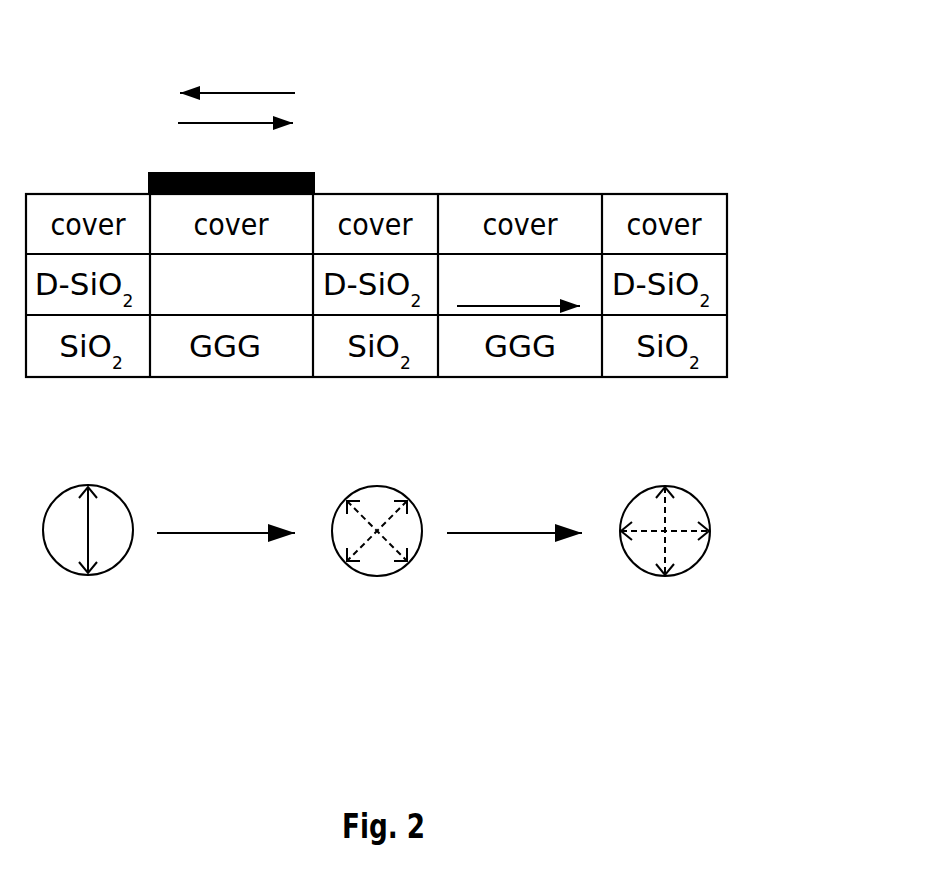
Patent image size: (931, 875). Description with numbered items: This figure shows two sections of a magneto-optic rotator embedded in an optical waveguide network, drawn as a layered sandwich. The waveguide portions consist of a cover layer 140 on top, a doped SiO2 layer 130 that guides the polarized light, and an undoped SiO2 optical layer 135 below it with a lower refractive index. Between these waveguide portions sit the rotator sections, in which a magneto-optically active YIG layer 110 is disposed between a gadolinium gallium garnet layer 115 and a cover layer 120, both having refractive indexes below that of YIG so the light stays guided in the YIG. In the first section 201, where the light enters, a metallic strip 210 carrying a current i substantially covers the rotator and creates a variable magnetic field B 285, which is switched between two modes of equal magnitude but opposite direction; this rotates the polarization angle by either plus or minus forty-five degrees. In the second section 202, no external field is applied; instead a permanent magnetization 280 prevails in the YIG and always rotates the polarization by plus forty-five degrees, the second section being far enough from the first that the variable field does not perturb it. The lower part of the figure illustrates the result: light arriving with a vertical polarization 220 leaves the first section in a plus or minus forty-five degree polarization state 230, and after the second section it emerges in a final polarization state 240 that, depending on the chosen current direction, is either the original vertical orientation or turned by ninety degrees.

The magneto-optically active layer 110 is at (288, 283).
The cover layer 120 is at (519, 184).
The gadolinium gallium garnet layer 115 is at (523, 386).
The permanent magnetization 280 is at (582, 309).
The cover layer 140 is at (737, 226).
The doped SiO2 layer 130 is at (737, 285).
The undoped SiO2 optical layer 135 is at (737, 347).
The metallic strip 210 is at (187, 164).
The variable magnetic field B 285 is at (277, 106).
The vertical polarization 220 is at (88, 600).
The first section 201 is at (232, 558).
The polarization state 230 is at (376, 598).
The second section 202 is at (520, 558).
The output polarization state 240 is at (665, 600).